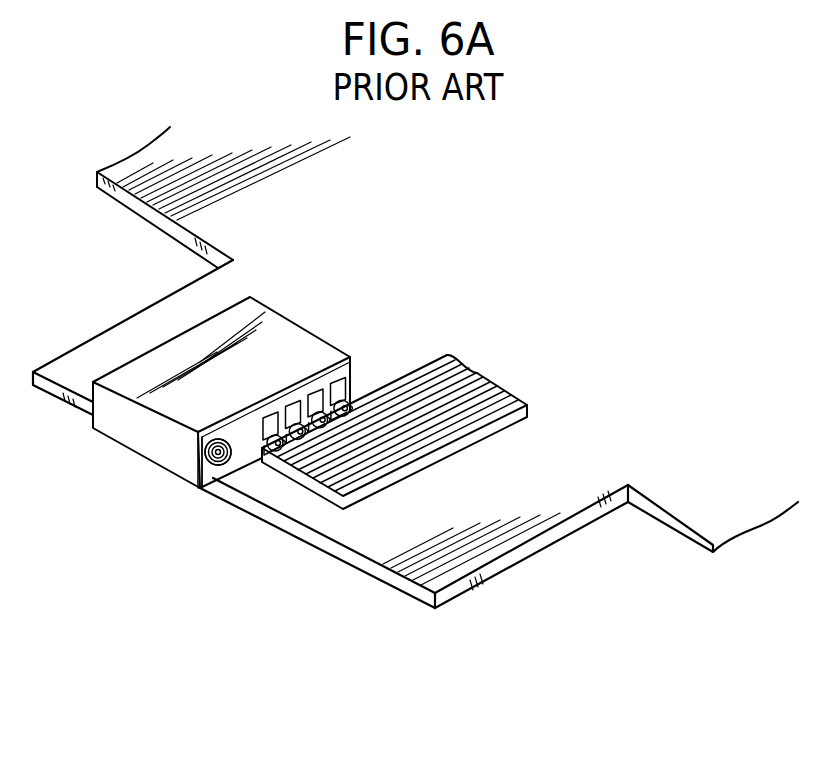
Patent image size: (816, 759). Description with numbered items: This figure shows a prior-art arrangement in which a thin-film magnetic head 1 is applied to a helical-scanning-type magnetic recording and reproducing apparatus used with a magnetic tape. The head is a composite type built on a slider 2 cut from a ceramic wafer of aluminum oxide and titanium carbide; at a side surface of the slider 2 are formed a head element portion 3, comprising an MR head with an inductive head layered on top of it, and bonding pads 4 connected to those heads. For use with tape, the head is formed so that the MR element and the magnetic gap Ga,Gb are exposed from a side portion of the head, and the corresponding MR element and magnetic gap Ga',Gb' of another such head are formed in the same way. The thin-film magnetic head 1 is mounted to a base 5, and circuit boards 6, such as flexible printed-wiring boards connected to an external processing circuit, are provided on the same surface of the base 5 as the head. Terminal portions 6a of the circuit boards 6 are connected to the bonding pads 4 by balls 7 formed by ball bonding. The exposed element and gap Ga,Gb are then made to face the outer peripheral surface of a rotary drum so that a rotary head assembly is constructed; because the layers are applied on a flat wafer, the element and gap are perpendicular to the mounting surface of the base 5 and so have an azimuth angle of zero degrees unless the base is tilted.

The thin-film magnetic head 1 is at (277, 307).
The slider 2 is at (187, 403).
The head element portion 3 is at (207, 463).
The bonding pads 4 is at (334, 384).
The base 5 is at (543, 487).
The circuit boards 6 is at (425, 372).
The terminal portions 6a is at (377, 423).
The balls 7 is at (342, 417).
The MR element and magnetic gap Ga,Gb is at (205, 460).
The MR element and magnetic gap of another thin-film magnetic head Ga',Gb' is at (161, 522).